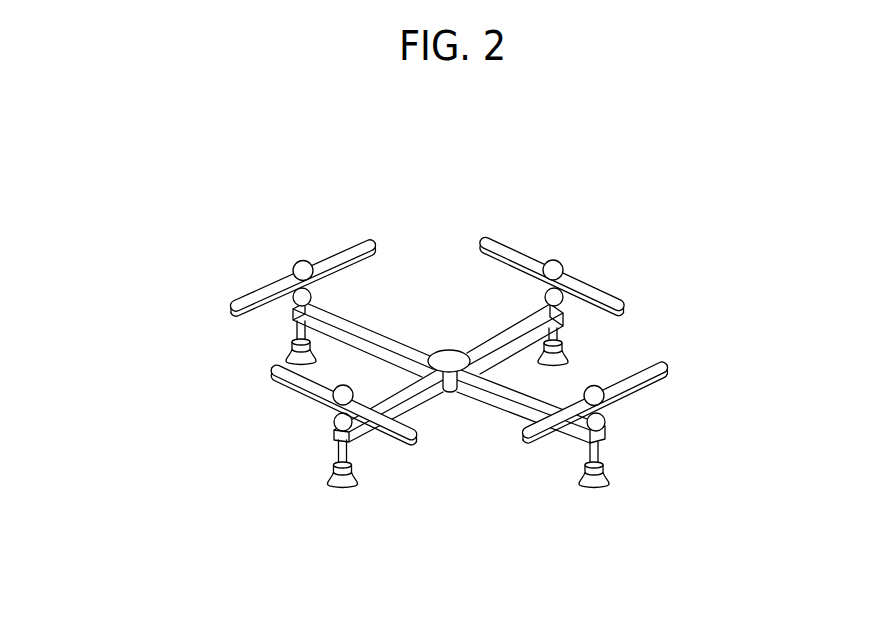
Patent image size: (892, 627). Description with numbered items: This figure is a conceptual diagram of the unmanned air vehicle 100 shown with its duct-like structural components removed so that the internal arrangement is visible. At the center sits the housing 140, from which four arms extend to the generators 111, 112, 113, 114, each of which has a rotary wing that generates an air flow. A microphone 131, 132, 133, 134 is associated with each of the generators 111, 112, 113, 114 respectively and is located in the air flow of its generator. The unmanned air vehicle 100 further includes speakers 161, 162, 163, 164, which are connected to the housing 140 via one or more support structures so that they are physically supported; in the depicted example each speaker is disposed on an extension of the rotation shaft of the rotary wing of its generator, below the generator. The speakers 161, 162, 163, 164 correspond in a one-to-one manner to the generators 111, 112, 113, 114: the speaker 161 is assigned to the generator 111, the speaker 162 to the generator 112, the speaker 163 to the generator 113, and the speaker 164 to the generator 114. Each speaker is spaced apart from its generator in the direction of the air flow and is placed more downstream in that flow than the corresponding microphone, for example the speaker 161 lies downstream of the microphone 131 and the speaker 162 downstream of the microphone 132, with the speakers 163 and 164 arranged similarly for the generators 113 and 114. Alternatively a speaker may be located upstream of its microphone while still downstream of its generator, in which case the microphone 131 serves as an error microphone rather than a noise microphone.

The unmanned air vehicle 100 is at (683, 115).
The generator 111 is at (343, 243).
The generator 112 is at (525, 248).
The generator 113 is at (312, 391).
The generator 114 is at (635, 393).
The microphone 131 is at (293, 290).
The microphone 132 is at (558, 291).
The microphone 133 is at (333, 420).
The microphone 134 is at (604, 422).
The housing 140 is at (437, 350).
The speaker 161 is at (284, 352).
The speaker 162 is at (566, 352).
The speaker 163 is at (341, 488).
The speaker 164 is at (592, 488).